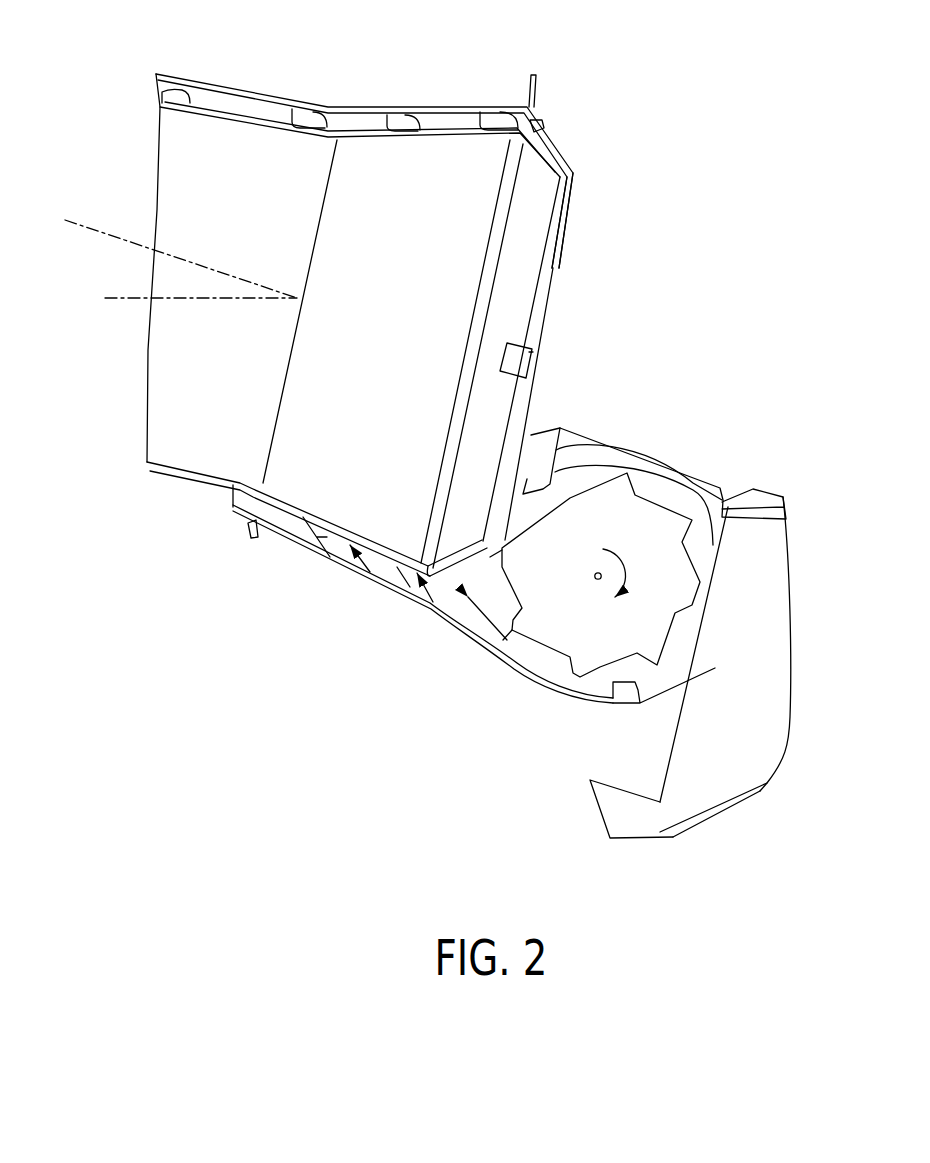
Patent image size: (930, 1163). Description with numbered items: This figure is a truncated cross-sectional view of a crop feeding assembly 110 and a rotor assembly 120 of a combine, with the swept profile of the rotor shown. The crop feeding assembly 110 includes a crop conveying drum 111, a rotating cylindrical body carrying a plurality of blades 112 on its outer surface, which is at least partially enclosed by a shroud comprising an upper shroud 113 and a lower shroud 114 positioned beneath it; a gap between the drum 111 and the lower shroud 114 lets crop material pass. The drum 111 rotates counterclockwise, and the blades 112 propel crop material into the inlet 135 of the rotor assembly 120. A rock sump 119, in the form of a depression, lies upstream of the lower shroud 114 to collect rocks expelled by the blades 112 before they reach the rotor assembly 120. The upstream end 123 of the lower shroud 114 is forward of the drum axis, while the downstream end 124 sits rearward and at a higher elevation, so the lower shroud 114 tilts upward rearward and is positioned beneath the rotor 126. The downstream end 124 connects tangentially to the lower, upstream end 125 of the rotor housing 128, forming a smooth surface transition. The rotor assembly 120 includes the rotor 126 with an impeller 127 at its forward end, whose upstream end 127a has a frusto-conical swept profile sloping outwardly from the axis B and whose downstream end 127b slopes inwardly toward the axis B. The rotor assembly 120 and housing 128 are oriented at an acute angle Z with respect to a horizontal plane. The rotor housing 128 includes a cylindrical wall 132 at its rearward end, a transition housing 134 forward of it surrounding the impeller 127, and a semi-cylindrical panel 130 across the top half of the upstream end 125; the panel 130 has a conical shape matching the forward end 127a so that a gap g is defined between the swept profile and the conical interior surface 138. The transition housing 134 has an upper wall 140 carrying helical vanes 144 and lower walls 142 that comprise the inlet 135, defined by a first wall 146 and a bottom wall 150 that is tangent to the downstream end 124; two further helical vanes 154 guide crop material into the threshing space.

The crop feeding assembly 110 is at (512, 627).
The crop conveying drum 111 is at (662, 518).
The blades 112 is at (687, 577).
The upper shroud 113 is at (658, 468).
The lower shroud 114 is at (534, 687).
The rock sump 119 is at (697, 742).
The rotor assembly 120 is at (360, 375).
The upstream end of the lower shroud 123 is at (643, 703).
The downstream end of the lower shroud 124 is at (485, 640).
The upstream end of the rotor housing 125 is at (532, 93).
The rotor 126 is at (177, 197).
The impeller 127 is at (505, 277).
The upstream end of the impeller 127a is at (547, 143).
The downstream end of the impeller 127b is at (450, 130).
The rotor housing 128 is at (292, 107).
The semi-cylindrical panel 130 is at (567, 230).
The cylindrical wall 132 is at (212, 85).
The transition housing 134 is at (410, 83).
The inlet 135 is at (458, 583).
The conical interior surface 138 is at (547, 117).
The upper wall 140 is at (392, 110).
The lower walls 142 is at (283, 540).
The helical vanes 144 is at (322, 120).
The first wall 146 is at (517, 360).
The bottom wall 150 is at (367, 580).
The helical vanes 154 is at (312, 550).
The gap g is at (567, 150).
The acute angle Z is at (220, 297).
The axis of rotation B is at (103, 237).